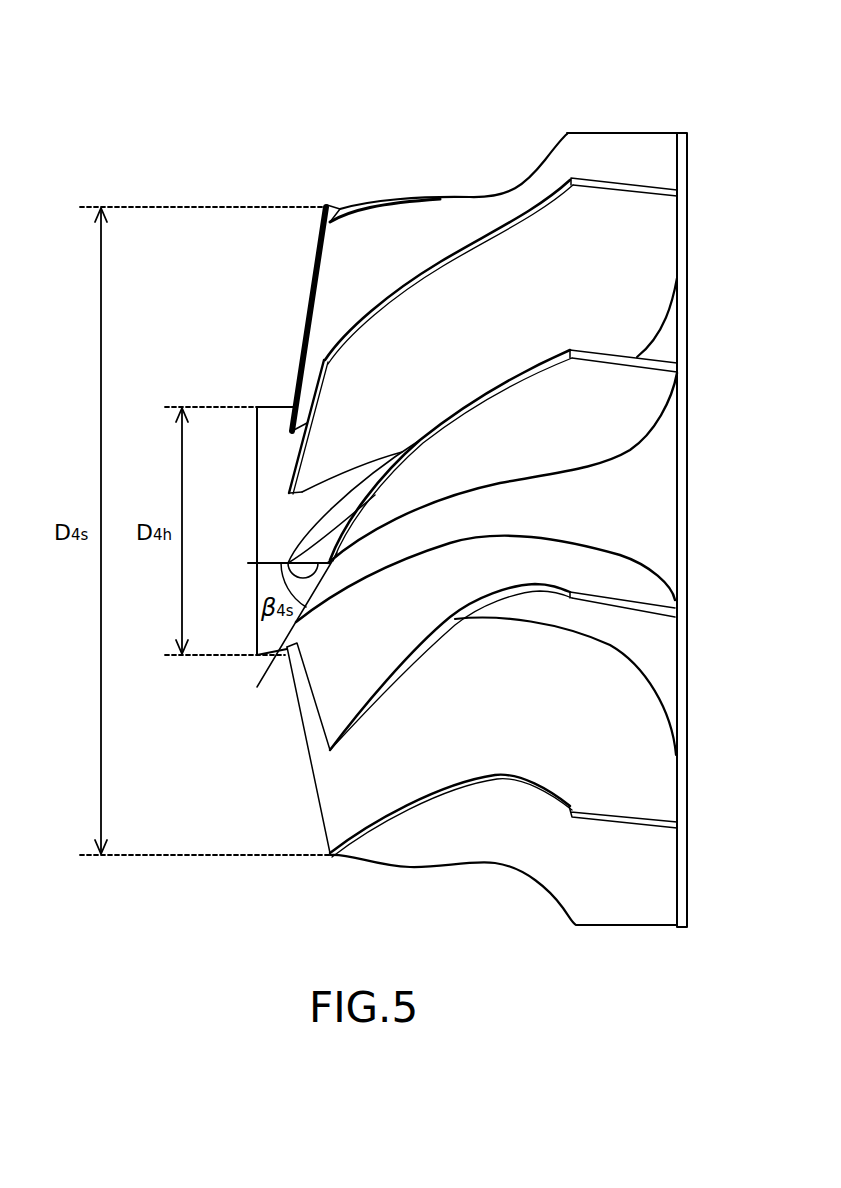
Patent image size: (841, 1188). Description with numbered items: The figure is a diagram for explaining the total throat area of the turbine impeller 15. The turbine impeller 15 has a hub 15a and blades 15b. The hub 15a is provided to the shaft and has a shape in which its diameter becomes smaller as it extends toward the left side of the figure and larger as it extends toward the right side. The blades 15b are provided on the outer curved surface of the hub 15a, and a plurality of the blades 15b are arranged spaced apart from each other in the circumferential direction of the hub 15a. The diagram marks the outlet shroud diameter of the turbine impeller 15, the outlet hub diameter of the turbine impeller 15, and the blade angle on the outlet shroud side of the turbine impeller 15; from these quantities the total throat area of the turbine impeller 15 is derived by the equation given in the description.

The turbine impeller 15 is at (328, 89).
The hub 15a is at (275, 406).
The blades 15b is at (482, 196).